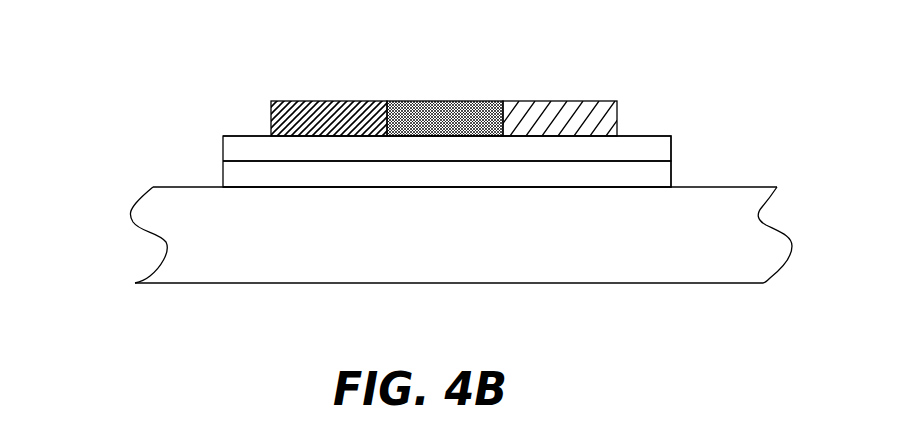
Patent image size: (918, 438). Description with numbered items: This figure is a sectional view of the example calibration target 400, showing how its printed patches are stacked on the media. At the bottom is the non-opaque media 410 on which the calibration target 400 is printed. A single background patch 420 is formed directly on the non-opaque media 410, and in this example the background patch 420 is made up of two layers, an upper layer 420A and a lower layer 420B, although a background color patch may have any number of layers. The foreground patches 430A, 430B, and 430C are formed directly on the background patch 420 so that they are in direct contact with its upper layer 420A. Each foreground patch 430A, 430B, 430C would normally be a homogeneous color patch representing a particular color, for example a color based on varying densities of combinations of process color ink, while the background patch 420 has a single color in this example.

The calibration target 400 is at (633, 72).
The non-opaque media 410 is at (136, 202).
The background patch 420 is at (222, 143).
The layer 420A is at (671, 149).
The layer 420B is at (671, 177).
The foreground patch 430A is at (290, 100).
The foreground patch 430B is at (468, 100).
The foreground patch 430C is at (594, 100).